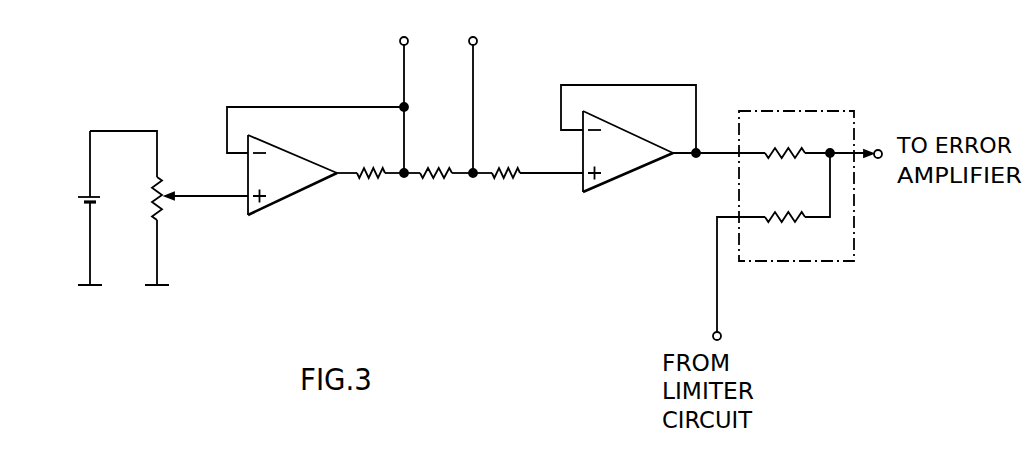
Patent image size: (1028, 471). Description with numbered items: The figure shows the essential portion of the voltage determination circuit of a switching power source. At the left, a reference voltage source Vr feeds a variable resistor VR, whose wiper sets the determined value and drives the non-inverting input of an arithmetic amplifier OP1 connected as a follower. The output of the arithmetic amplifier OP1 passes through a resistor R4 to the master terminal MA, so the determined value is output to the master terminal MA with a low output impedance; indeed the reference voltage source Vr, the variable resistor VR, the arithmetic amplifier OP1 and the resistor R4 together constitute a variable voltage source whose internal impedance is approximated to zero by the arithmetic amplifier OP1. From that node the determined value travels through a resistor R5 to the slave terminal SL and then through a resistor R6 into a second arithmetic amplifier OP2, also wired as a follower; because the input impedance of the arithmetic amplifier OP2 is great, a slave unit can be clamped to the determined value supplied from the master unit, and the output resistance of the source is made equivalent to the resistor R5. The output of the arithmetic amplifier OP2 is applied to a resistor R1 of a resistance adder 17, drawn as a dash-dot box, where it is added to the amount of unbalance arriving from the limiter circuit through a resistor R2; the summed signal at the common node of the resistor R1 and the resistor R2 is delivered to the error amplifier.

The resistance adder 17 is at (797, 206).
The resistor R1 is at (782, 150).
The resistor R2 is at (782, 213).
The resistor R4 is at (366, 170).
The resistor R5 is at (436, 177).
The resistor R6 is at (500, 178).
The arithmetic amplifier OP1 is at (303, 190).
The arithmetic amplifier OP2 is at (630, 175).
The variable resistor VR is at (150, 192).
The reference voltage source Vr is at (77, 199).
The master terminal MA is at (401, 95).
The slave terminal SL is at (468, 95).